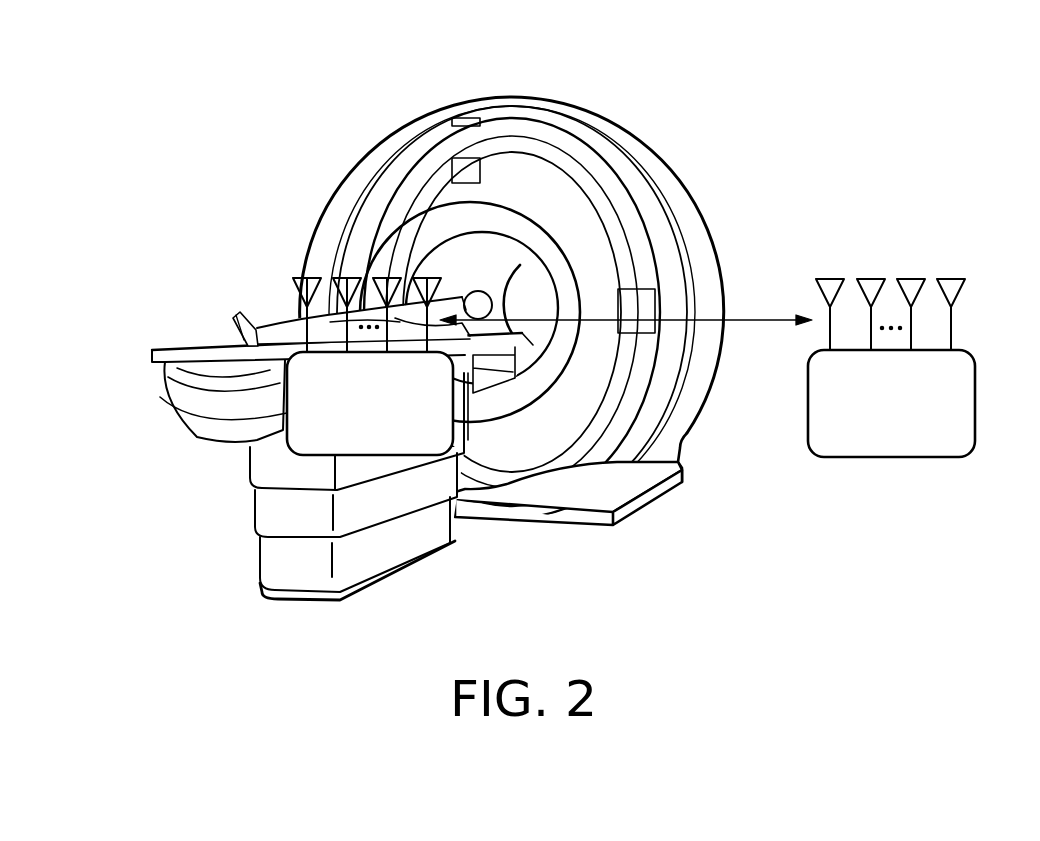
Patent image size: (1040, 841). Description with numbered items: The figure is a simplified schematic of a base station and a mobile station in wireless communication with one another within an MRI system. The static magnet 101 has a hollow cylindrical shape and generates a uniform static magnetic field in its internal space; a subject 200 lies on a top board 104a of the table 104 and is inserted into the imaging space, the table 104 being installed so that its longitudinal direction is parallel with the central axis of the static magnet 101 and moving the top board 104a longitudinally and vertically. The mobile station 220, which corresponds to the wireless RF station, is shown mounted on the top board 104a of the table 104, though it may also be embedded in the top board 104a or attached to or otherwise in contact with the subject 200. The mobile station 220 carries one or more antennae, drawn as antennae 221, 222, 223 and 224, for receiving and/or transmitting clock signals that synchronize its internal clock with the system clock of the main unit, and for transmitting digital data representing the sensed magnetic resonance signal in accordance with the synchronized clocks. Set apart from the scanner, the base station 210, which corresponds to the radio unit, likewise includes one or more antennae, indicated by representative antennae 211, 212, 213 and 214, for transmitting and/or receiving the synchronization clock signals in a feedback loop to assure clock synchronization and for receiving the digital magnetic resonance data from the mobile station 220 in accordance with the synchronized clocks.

The static magnet 101 is at (503, 97).
The table 104 is at (250, 505).
The top board 104a is at (152, 352).
The subject 200 is at (240, 313).
The base station 210 is at (873, 448).
The antenna 211 is at (830, 279).
The antenna 212 is at (871, 279).
The antenna 213 is at (911, 279).
The antenna 214 is at (951, 279).
The mobile station 220 is at (348, 447).
The mobile station antenna 221 is at (307, 278).
The mobile station antenna 222 is at (348, 278).
The mobile station antenna 223 is at (387, 278).
The mobile station antenna 224 is at (427, 278).